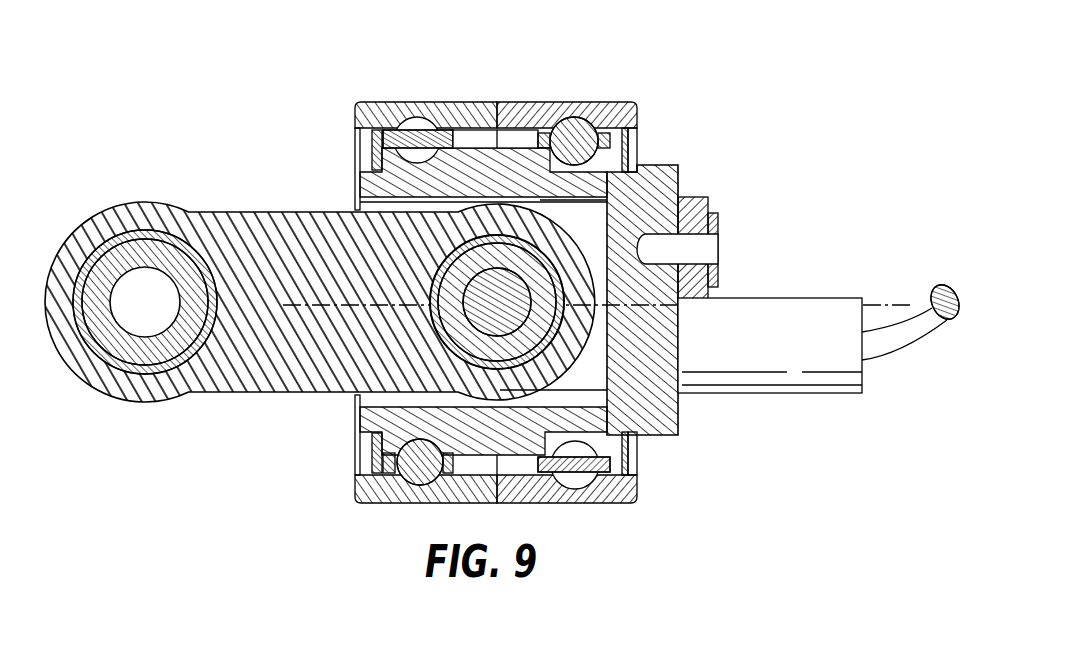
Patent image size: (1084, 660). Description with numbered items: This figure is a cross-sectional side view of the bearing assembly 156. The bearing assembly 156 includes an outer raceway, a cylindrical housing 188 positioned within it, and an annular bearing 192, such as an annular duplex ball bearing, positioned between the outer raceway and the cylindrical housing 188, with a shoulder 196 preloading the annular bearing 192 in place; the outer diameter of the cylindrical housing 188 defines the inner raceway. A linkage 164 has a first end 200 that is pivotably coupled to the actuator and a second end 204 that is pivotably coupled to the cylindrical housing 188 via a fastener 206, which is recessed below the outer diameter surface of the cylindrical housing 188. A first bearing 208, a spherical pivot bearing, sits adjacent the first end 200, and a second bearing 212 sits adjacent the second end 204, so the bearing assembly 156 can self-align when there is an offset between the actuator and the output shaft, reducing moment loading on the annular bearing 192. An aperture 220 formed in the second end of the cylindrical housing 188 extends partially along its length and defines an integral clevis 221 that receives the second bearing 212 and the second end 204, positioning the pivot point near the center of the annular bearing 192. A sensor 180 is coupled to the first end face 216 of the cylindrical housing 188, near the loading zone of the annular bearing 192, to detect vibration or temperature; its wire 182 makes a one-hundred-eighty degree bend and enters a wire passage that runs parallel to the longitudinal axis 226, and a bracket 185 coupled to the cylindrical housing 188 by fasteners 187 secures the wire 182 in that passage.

The bearing assembly 156 is at (612, 62).
The linkage 164 is at (258, 223).
The first end 200 is at (63, 235).
The first bearing 208 is at (152, 343).
The second bearing 212 is at (430, 323).
The aperture 220 is at (358, 420).
The cylindrical housing 188 is at (360, 183).
The annular bearing 192 is at (472, 138).
The shoulder 196 is at (643, 138).
The first end face 216 is at (672, 183).
The bracket 185 is at (680, 409).
The fastener 187 is at (710, 250).
The sensor 180 is at (778, 395).
The wire 182 is at (892, 345).
The longitudinal axis 226 is at (873, 305).
The second end 204 is at (573, 337).
The fastener 206 is at (500, 323).
The integral clevis 221 is at (572, 380).